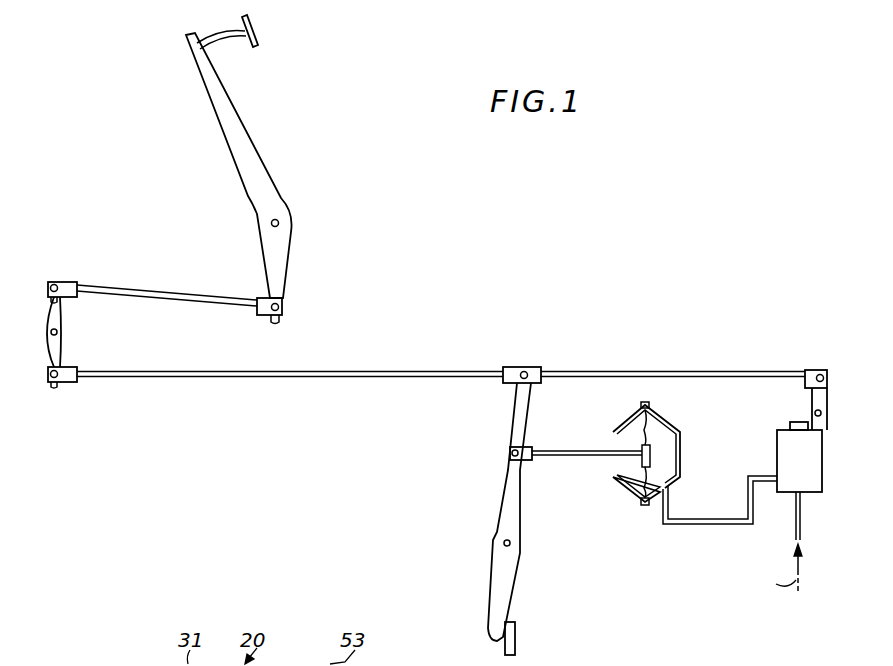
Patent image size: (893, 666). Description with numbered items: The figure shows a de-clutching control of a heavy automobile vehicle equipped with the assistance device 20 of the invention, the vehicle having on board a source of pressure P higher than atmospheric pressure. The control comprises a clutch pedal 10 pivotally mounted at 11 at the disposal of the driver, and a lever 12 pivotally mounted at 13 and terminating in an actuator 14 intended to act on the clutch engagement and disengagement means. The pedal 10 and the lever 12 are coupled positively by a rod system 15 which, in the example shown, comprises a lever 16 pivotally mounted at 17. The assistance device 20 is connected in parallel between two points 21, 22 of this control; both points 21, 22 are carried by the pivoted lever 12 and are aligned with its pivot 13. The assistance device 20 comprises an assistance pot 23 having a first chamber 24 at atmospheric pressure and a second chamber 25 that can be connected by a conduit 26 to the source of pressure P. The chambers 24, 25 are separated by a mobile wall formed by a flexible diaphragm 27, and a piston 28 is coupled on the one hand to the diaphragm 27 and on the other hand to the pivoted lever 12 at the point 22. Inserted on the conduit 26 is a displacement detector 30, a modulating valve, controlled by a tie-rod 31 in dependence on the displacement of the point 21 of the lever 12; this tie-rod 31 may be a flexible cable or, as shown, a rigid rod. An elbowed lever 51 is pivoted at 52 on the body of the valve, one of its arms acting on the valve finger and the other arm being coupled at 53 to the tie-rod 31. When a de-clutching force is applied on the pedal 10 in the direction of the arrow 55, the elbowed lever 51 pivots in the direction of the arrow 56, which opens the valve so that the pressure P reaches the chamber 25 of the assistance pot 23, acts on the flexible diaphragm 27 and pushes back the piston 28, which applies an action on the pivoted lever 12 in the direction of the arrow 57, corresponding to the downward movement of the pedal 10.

The clutch pedal 10 is at (262, 154).
The pedal pivot 11 is at (281, 226).
The lever 12 is at (528, 551).
The lever pivot 13 is at (503, 543).
The actuator 14 is at (516, 633).
The rod system 15 is at (136, 384).
The lever 16 is at (62, 341).
The lever pivot 17 is at (62, 327).
The assistance device 20 is at (673, 366).
The first connection point 21 is at (522, 370).
The second connection point 22 is at (511, 453).
The assistance pot 23 is at (636, 508).
The first chamber 24 is at (624, 432).
The second chamber 25 is at (672, 468).
The conduit 26 is at (705, 526).
The flexible diaphragm 27 is at (652, 428).
The piston 28 is at (595, 458).
The displacement detector 30 is at (771, 455).
The tie-rod 31 is at (588, 370).
The elbowed lever 51 is at (797, 423).
The elbowed lever pivot 52 is at (817, 418).
The coupling point 53 is at (814, 381).
The arrow 55 is at (240, 72).
The arrow 56 is at (786, 350).
The arrow 57 is at (467, 393).